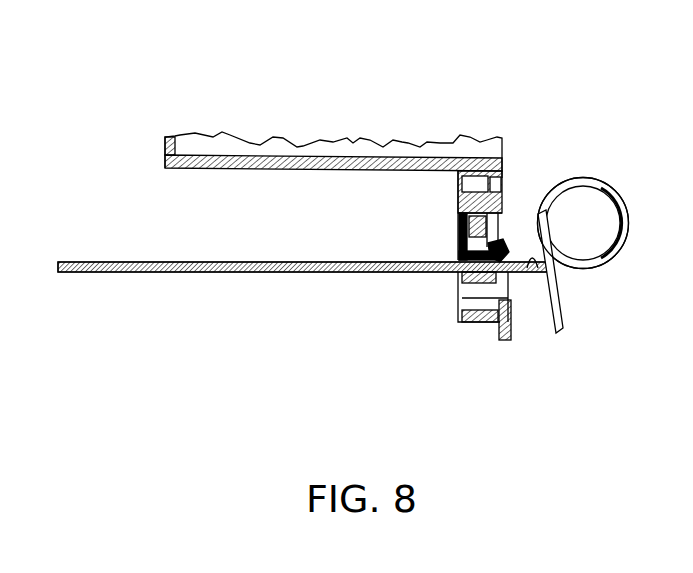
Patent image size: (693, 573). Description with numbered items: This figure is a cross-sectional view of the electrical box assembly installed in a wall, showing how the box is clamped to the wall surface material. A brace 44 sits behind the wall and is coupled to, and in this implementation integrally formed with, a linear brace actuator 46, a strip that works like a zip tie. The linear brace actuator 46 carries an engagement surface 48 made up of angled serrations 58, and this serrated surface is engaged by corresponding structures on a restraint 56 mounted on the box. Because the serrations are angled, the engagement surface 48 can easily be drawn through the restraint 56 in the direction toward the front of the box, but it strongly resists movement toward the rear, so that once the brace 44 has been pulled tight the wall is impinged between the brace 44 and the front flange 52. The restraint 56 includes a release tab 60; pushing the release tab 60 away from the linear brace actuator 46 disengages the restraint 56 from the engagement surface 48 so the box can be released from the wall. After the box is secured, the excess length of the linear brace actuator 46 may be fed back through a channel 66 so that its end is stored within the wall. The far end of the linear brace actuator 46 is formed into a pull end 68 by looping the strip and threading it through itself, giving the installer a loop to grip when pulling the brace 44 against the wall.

The brace 44 is at (362, 150).
The linear brace actuator 46 is at (583, 271).
The engagement surface 48 is at (272, 273).
The front flange 52 is at (503, 333).
The restraint 56 is at (516, 246).
The angled serrations 58 is at (325, 273).
The release tab 60 is at (492, 243).
The channel 66 is at (510, 324).
The pull end 68 is at (631, 192).